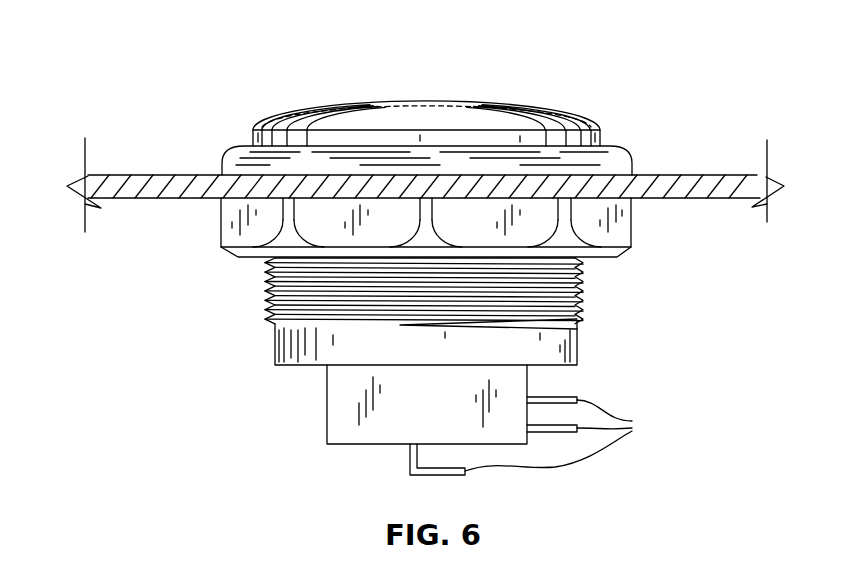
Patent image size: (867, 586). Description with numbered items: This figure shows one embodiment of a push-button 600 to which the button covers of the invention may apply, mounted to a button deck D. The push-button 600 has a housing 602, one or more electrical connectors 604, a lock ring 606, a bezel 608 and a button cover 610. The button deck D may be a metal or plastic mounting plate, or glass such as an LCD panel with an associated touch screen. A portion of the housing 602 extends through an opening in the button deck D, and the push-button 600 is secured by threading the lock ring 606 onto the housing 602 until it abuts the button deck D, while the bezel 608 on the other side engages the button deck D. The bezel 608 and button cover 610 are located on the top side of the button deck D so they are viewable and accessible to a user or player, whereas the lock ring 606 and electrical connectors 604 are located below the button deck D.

The push-button 600 is at (635, 105).
The housing 602 is at (596, 314).
The electrical connectors 604 is at (499, 420).
The lock ring 606 is at (632, 225).
The bezel 608 is at (624, 157).
The button cover 610 is at (491, 101).
The button deck D is at (731, 188).